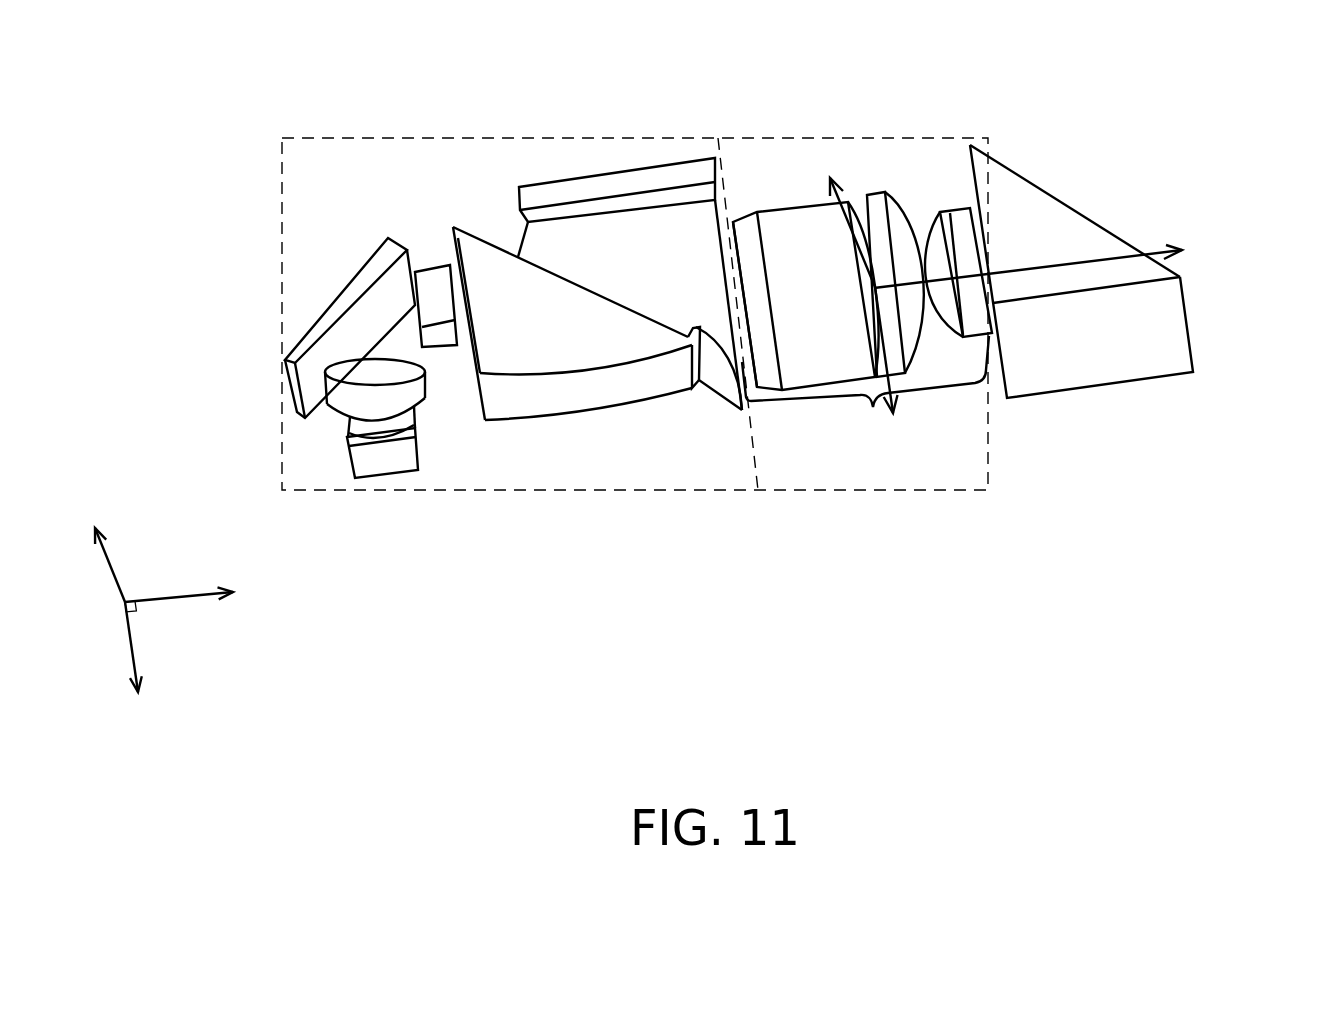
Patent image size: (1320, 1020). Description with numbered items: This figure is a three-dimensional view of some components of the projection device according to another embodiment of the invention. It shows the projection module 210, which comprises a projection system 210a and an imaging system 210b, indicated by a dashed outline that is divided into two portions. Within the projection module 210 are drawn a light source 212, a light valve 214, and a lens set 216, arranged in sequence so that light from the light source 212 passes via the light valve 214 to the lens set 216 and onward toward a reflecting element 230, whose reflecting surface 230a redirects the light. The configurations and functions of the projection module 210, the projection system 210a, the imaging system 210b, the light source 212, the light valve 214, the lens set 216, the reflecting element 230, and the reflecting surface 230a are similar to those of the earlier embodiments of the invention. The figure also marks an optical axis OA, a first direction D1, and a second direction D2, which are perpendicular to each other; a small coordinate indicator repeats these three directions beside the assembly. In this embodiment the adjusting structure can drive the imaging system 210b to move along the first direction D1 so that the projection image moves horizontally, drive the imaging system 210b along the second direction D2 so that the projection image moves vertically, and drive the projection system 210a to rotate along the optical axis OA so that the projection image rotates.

The projection module 210 is at (514, 530).
The projection system 210a is at (287, 360).
The imaging system 210b is at (990, 432).
The light source 212 is at (346, 408).
The light valve 214 is at (573, 190).
The lens set 216 is at (874, 397).
The reflecting element 230 is at (1167, 333).
The reflecting surface 230a is at (1085, 215).
The optical axis OA is at (1127, 243).
The first direction D1 is at (910, 383).
The second direction D2 is at (848, 195).